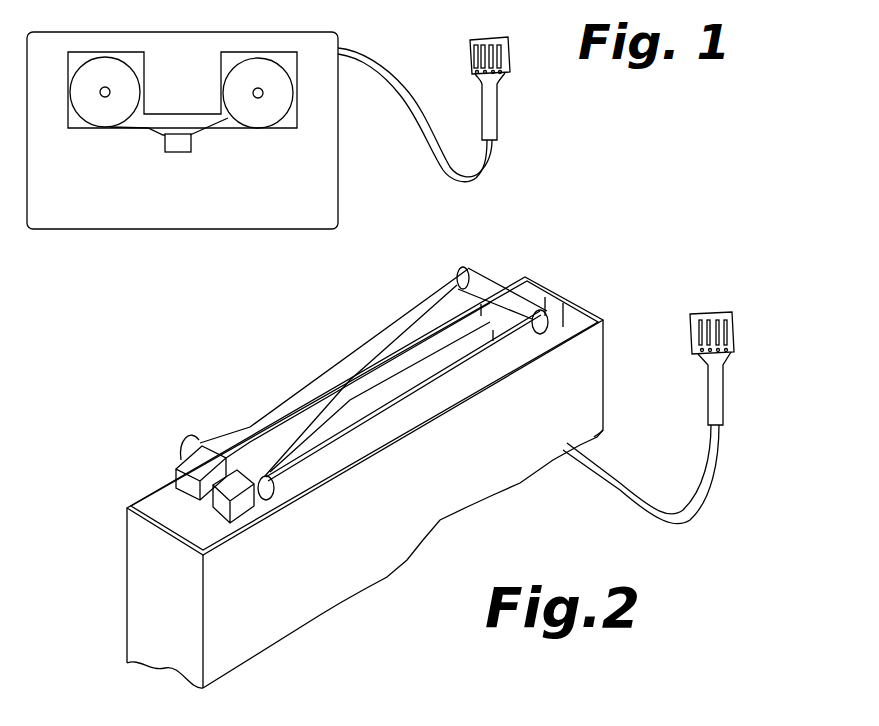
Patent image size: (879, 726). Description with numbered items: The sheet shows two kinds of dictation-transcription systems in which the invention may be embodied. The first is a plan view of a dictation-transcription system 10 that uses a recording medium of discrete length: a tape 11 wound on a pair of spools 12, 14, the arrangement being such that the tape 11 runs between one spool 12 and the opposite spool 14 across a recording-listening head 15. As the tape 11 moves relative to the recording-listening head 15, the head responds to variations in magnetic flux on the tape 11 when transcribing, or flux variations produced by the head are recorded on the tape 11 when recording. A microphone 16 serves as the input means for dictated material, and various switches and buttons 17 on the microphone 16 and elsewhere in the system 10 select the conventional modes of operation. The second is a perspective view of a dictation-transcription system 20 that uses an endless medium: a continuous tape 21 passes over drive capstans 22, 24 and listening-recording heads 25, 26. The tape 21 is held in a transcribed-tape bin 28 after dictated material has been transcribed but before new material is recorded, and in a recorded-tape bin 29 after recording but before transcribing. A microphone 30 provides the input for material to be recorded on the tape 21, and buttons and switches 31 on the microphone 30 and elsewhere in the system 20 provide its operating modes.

In FIG. 1, the dictation-transcription system 10 is at (107, 232).
In FIG. 1, the tape 11 is at (233, 120).
In FIG. 1, the spool 12 is at (126, 86).
In FIG. 1, the spool 14 is at (265, 68).
In FIG. 1, the recording-listening head 15 is at (182, 152).
In FIG. 1, the microphone 16 is at (504, 37).
In FIG. 1, the switches and buttons 17 is at (498, 86).
In FIG. 2, the dictation-transcription system 20 is at (538, 272).
In FIG. 2, the continuous tape 21 is at (255, 430).
In FIG. 2, the drive capstan 22 is at (270, 493).
In FIG. 2, the drive capstan 24 is at (540, 334).
In FIG. 2, the listening-recording head 25 is at (187, 463).
In FIG. 2, the listening-recording head 26 is at (238, 503).
In FIG. 2, the transcribed-tape bin 28 is at (153, 508).
In FIG. 2, the recorded-tape bin 29 is at (342, 458).
In FIG. 2, the microphone 30 is at (712, 313).
In FIG. 2, the buttons and switches 31 is at (727, 357).